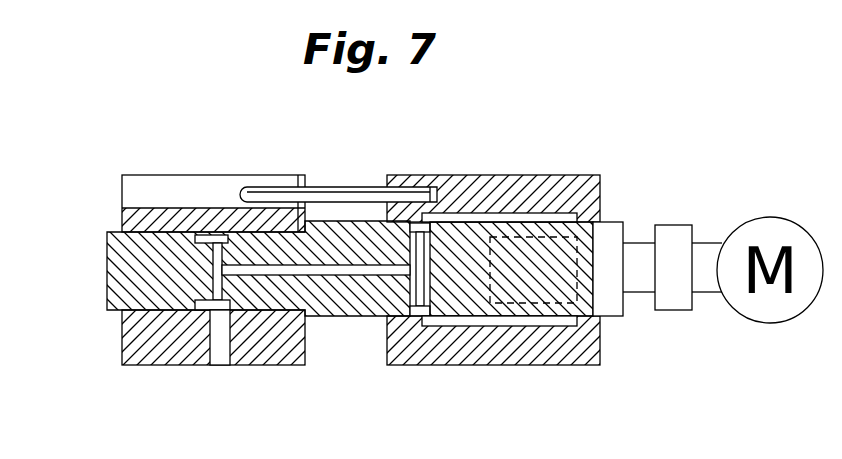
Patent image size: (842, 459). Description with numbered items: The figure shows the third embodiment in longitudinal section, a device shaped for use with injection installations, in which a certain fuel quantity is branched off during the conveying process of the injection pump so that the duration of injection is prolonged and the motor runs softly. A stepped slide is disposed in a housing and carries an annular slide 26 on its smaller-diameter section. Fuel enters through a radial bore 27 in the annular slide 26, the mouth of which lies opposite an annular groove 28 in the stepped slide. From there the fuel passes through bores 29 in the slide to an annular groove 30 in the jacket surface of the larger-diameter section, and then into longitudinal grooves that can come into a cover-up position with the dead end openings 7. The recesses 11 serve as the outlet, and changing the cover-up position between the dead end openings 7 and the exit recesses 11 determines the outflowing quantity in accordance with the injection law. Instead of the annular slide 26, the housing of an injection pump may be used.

The dead end openings 7 is at (477, 318).
The recesses 11 is at (515, 240).
The annular slide 26 is at (277, 348).
The radial bore 27 is at (220, 348).
The annular groove 28 is at (207, 310).
The bores 29 is at (421, 280).
The annular groove 30 is at (408, 319).